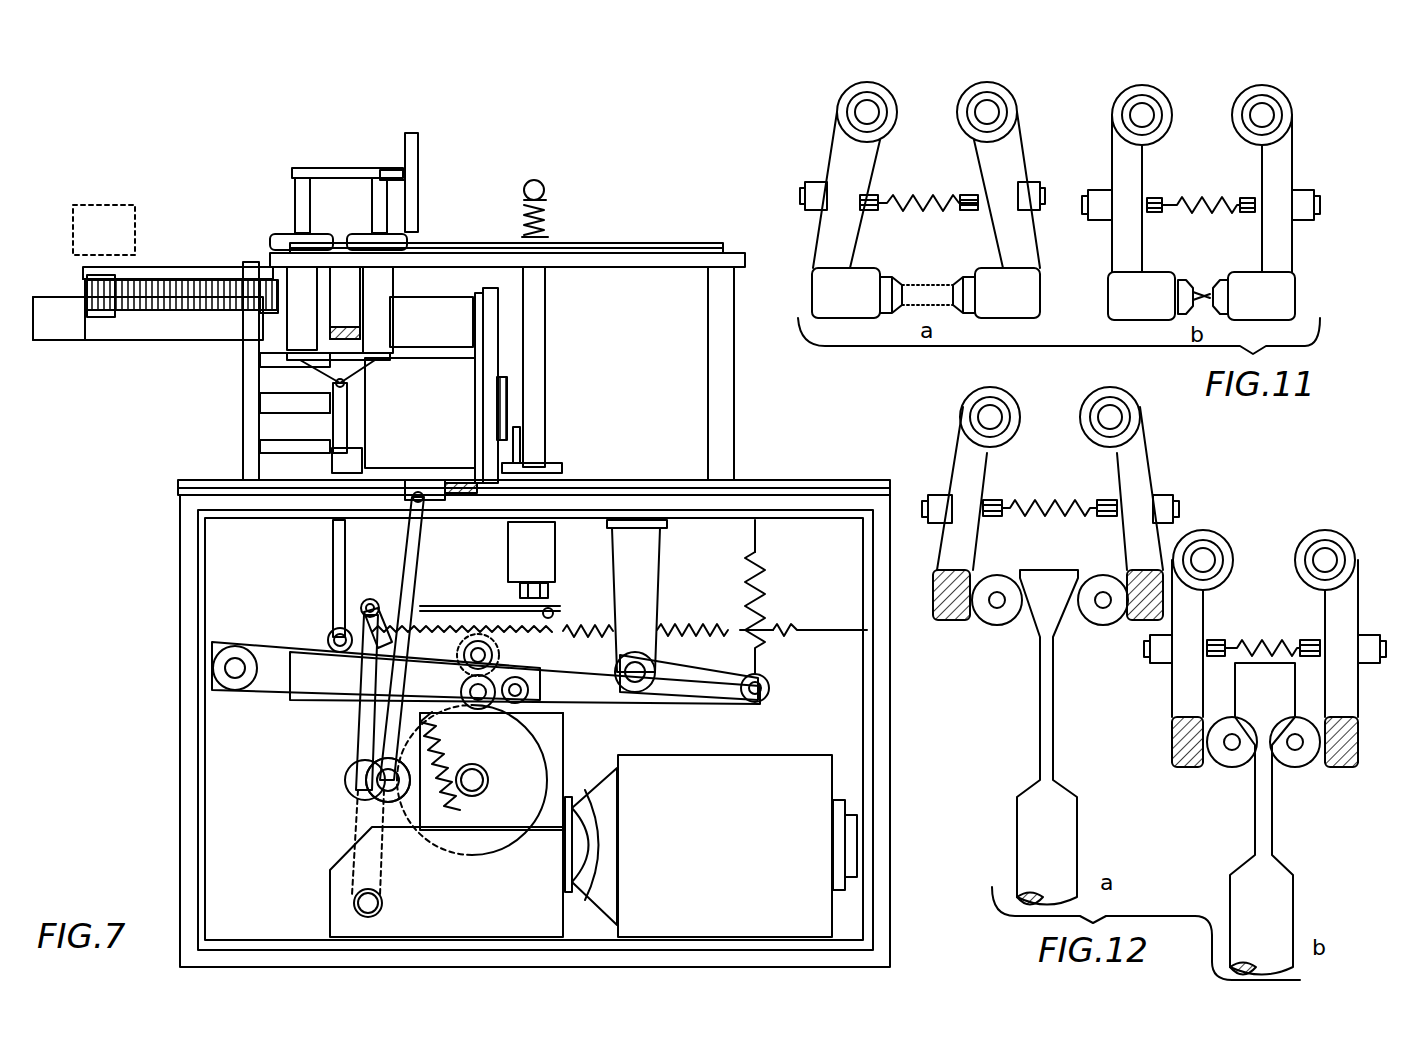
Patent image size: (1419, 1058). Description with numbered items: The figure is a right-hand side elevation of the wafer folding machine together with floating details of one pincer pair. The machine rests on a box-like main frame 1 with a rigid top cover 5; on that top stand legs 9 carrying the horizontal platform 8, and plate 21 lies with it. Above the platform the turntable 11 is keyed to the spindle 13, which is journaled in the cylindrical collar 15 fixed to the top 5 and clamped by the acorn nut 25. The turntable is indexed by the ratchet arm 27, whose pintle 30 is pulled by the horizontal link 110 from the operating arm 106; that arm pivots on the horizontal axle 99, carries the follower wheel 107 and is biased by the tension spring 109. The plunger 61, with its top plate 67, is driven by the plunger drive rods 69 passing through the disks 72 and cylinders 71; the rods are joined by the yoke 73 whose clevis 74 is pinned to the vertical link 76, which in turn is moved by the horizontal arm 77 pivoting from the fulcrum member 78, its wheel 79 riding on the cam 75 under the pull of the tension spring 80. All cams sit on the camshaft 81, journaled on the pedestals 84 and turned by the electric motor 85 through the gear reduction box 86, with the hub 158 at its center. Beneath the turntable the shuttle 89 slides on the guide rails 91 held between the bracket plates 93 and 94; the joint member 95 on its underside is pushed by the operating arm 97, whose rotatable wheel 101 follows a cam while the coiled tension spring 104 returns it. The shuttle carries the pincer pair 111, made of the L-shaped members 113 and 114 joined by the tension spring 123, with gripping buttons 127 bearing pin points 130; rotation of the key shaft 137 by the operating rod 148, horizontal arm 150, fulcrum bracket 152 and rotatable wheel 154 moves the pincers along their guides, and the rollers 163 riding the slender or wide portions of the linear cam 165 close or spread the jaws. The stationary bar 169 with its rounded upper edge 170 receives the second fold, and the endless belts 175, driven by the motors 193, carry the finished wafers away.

In FIG. 7, the main frame 1 is at (185, 575).
In FIG. 7, the top cover 5 is at (195, 485).
In FIG. 7, the platform 8 is at (675, 258).
In FIG. 7, the legs 9 is at (718, 350).
In FIG. 7, the turntable 11 is at (597, 250).
In FIG. 7, the spindle 13 is at (542, 305).
In FIG. 7, the cylindrical collar 15 is at (550, 560).
In FIG. 7, the plate 21 is at (632, 250).
In FIG. 7, the acorn nut 25 is at (546, 190).
In FIG. 7, the ratchet arm 27 is at (548, 600).
In FIG. 7, the pintle 30 is at (508, 590).
In FIG. 7, the plunger 61 is at (418, 210).
In FIG. 7, the top bracket plate 67 is at (360, 150).
In FIG. 7, the plunger drive rods 69 is at (295, 196).
In FIG. 7, the cylinder 71 is at (390, 330).
In FIG. 7, the disk 72 is at (270, 240).
In FIG. 7, the yoke 73 is at (380, 365).
In FIG. 7, the clevis 74 is at (350, 385).
In FIG. 7, the cam 75 is at (540, 730).
In FIG. 7, the vertical link 76 is at (347, 436).
In FIG. 7, the horizontal arm 77 is at (708, 638).
In FIG. 7, the fulcrum member 78 is at (652, 605).
In FIG. 7, the rotatable wheel 79 is at (517, 630).
In FIG. 7, the tension spring 80 is at (765, 615).
In FIG. 7, the camshaft 81 is at (455, 808).
In FIG. 7, the pedestals 84 is at (446, 882).
In FIG. 7, the electric motor 85 is at (748, 758).
In FIG. 7, the gear reduction box 86 is at (548, 768).
In FIG. 7, the shuttle 89 is at (520, 445).
In FIG. 7, the guide rails 91 is at (260, 358).
In FIG. 7, the bracket plate 93 is at (260, 402).
In FIG. 7, the bracket plate 94 is at (492, 348).
In FIG. 7, the joint member 95 is at (405, 498).
In FIG. 7, the operating arm 97 is at (410, 580).
In FIG. 7, the horizontal axle 99 is at (354, 903).
In FIG. 7, the rotatable wheel 101 is at (370, 800).
In FIG. 7, the coiled tension spring 104 is at (412, 552).
In FIG. 7, the operating arm 106 is at (370, 712).
In FIG. 7, the follower wheel 107 is at (345, 776).
In FIG. 7, the tension spring 109 is at (575, 632).
In FIG. 7, the link 110 is at (436, 612).
In FIG. 11, the pincer pair 111 is at (1016, 104).
In FIG. 12, the pincer pair 111 is at (1146, 476).
In FIG. 11, the L-shaped pincer member 113 is at (1036, 258).
In FIG. 12, the L-shaped pincer member 113 is at (1150, 535).
In FIG. 11, the L-shaped pincer member 114 is at (830, 228).
In FIG. 12, the L-shaped pincer member 114 is at (963, 560).
In FIG. 11, the tension spring 123 is at (910, 200).
In FIG. 12, the tension spring 123 is at (1154, 579).
In FIG. 11, the gripping buttons 127 is at (898, 278).
In FIG. 11, the pin points 130 is at (940, 294).
In FIG. 7, the key shaft 137 is at (330, 410).
In FIG. 7, the operating rod 148 is at (515, 430).
In FIG. 7, the horizontal arm 150 is at (290, 660).
In FIG. 7, the fulcrum bracket 152 is at (215, 690).
In FIG. 7, the rotatable wheel 154 is at (510, 675).
In FIG. 7, the hub 158 is at (440, 765).
In FIG. 12, the rollers 163 is at (990, 622).
In FIG. 12, the linear cam 165 is at (1075, 845).
In FIG. 7, the stationary bar 169 is at (150, 310).
In FIG. 7, the upper edge 170 is at (75, 297).
In FIG. 7, the endless belts 175 is at (182, 295).
In FIG. 7, the motors 193 is at (105, 215).